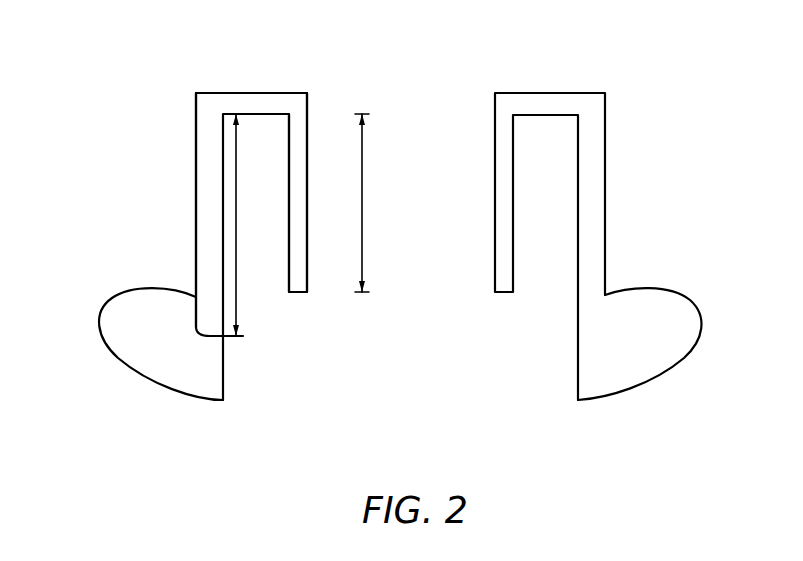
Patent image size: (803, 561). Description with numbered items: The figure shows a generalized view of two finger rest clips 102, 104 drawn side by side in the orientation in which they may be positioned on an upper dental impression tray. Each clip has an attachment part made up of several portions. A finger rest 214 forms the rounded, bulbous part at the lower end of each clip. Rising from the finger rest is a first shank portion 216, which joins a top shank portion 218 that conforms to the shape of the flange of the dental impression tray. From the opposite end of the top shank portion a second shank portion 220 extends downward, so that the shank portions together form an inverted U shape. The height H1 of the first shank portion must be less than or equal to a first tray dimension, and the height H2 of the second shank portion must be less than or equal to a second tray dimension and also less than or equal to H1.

The finger rest clip 102 is at (233, 221).
The finger rest clip 104 is at (632, 111).
The finger rest 214 is at (121, 365).
The first shank portion 216 is at (196, 195).
The top shank portion 218 is at (252, 93).
The second shank portion 220 is at (307, 193).
The height of the first shank portion H1 is at (236, 300).
The height of the second shank portion H2 is at (362, 204).